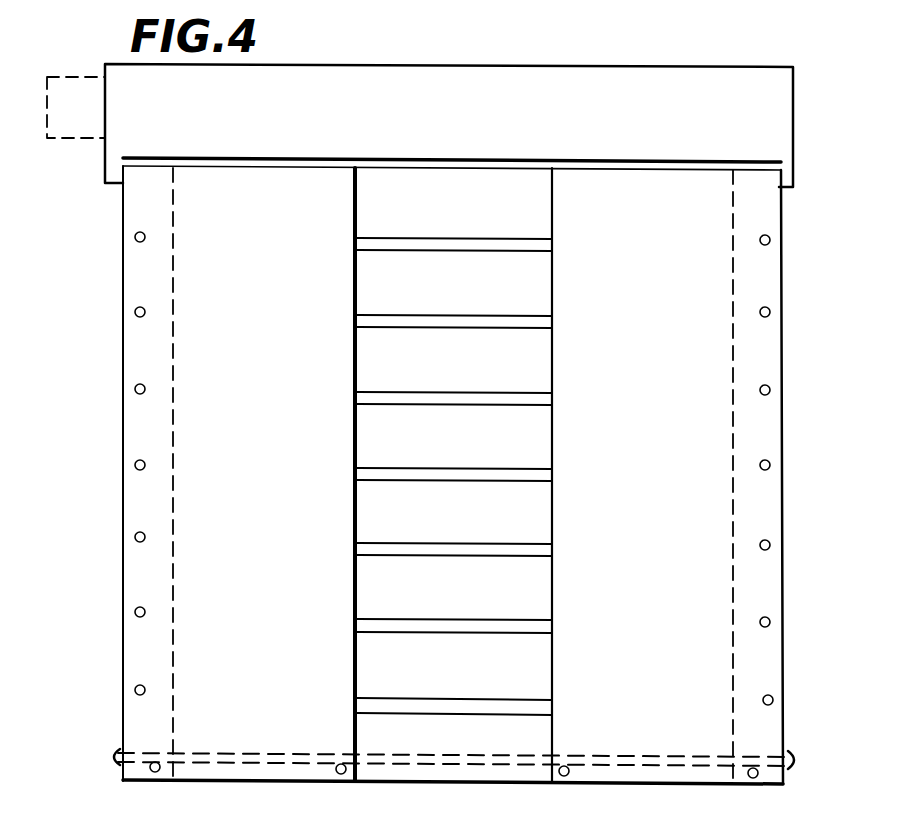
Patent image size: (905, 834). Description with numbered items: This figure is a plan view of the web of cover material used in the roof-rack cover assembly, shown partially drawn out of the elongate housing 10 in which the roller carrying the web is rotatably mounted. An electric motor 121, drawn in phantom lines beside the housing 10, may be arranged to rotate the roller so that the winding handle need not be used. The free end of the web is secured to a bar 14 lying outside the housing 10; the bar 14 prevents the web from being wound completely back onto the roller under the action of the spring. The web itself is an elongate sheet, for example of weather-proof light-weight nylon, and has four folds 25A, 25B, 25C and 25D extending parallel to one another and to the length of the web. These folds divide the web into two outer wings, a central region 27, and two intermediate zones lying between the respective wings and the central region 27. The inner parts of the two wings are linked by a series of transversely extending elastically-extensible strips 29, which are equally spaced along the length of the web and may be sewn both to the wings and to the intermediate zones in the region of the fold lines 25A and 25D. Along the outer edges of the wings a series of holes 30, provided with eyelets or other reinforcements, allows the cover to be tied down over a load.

The housing 10 is at (458, 132).
The electric motor 121 is at (84, 100).
The bar 14 is at (792, 757).
The fold 25A is at (352, 435).
The fold 25B is at (175, 495).
The fold 25C is at (732, 512).
The fold 25D is at (553, 440).
The central region 27 is at (449, 475).
The elastically-extensible strips 29 is at (552, 244).
The holes 30 is at (144, 240).